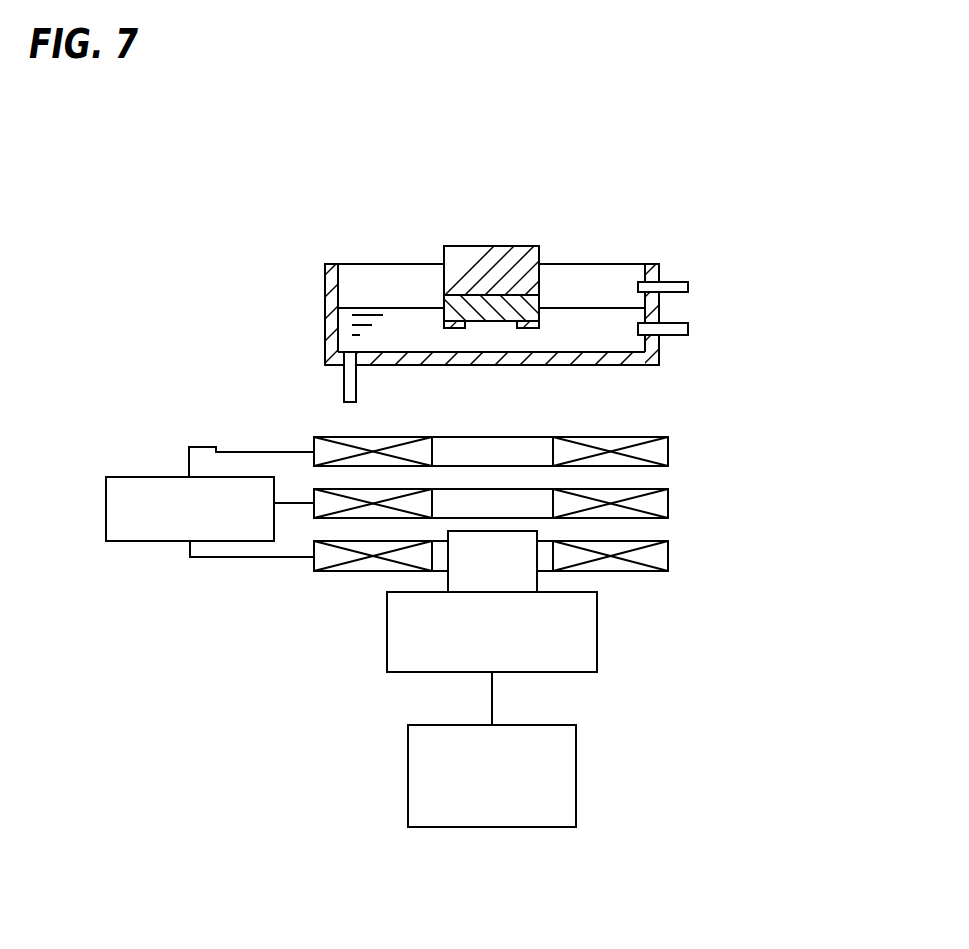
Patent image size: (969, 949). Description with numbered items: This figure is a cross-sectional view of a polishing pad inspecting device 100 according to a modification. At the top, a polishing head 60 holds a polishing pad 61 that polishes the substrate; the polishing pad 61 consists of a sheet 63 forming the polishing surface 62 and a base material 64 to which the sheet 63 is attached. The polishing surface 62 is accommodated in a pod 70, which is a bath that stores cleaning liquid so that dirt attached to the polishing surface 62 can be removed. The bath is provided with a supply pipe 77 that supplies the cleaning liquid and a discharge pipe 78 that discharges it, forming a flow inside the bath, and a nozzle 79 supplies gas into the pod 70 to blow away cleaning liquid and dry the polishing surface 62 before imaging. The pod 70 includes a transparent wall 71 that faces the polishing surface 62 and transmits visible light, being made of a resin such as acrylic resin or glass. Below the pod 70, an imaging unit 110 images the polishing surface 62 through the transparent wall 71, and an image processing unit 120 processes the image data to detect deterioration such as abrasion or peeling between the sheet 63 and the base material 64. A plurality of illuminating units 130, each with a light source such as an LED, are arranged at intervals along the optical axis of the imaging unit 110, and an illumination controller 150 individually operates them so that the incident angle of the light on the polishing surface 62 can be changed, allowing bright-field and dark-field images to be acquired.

The polishing head 60 is at (496, 226).
The polishing pad 61 is at (448, 213).
The polishing surface 62 is at (528, 328).
The sheet 63 is at (444, 327).
The base material 64 is at (474, 304).
The pod 70 is at (314, 321).
The transparent wall 71 is at (583, 357).
The supply pipe 77 is at (674, 330).
The discharge pipe 78 is at (357, 383).
The nozzle 79 is at (674, 286).
The polishing pad inspecting device 100 is at (450, 846).
The imaging unit 110 is at (598, 632).
The image processing unit 120 is at (548, 828).
The illuminating unit 130 is at (670, 452).
The illumination controller 150 is at (132, 476).